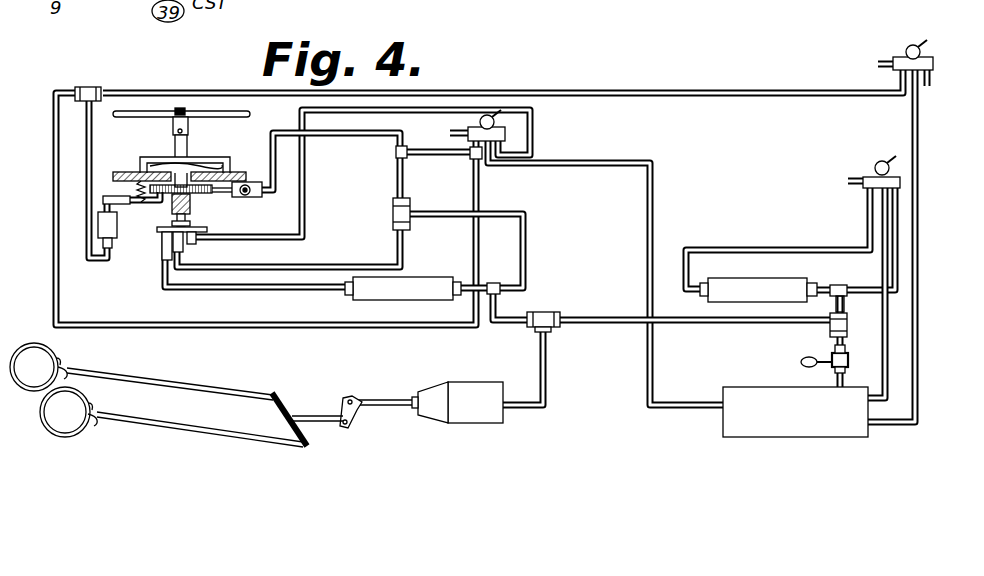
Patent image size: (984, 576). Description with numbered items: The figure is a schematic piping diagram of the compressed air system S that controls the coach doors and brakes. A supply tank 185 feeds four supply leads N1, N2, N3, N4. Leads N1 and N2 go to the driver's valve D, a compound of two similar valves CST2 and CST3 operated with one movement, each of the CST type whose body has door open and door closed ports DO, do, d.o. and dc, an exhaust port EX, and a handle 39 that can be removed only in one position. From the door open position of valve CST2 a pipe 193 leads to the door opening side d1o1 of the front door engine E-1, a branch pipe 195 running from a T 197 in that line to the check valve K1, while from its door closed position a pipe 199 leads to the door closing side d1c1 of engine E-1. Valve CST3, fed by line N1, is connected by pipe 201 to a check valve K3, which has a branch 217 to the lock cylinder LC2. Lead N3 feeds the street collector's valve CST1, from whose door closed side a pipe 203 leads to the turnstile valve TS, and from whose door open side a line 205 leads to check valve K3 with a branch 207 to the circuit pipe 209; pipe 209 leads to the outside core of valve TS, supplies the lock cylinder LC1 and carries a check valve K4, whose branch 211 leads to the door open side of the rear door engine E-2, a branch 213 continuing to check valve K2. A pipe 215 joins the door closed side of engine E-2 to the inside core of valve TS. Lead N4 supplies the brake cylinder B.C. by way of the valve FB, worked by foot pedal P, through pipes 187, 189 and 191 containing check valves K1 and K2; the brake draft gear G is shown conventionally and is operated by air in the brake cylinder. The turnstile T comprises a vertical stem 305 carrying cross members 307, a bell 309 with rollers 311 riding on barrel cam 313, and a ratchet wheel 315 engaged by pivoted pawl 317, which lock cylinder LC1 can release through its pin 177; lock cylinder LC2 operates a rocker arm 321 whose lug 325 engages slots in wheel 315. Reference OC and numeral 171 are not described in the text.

The check valve K3 is at (97, 88).
The cross members 307 is at (163, 112).
The element T is at (187, 183).
The vertical stem 305 is at (190, 135).
The bell 309 is at (190, 152).
The rollers 311 is at (160, 134).
The barrel cam 313 is at (130, 172).
The rocker arm 321 is at (119, 191).
The lug 325 is at (165, 210).
The ratchet wheel 315 is at (191, 204).
The pivoted pawl 317 is at (226, 205).
The rod 171 is at (262, 205).
The lock cylinder LC1 is at (259, 192).
The lock cylinder LC2 is at (100, 224).
The pin 177 is at (100, 211).
The branch 217 is at (88, 184).
The exhaust port EX is at (455, 133).
The turnstile valve TS is at (158, 252).
The port OC is at (170, 268).
The door open port DO is at (194, 259).
The pipe 203 is at (278, 239).
The line 205 is at (54, 166).
The pipe 215 is at (256, 288).
The circuit pipe 209 is at (398, 156).
The branch 207 is at (433, 154).
The check valve K4 is at (395, 220).
The check valve branch 211 is at (528, 251).
The rear door engine E-2 is at (403, 289).
The door closing side d1c1 is at (352, 298).
The door opening side d1o1 is at (445, 283).
The branch 213 is at (491, 325).
The check valve K2 is at (548, 318).
The pipe 191 is at (548, 367).
The pipe 189 is at (710, 324).
The brake draft gear G is at (240, 405).
The brake cylinder B.C. is at (478, 410).
The street collector's valve CST1 is at (485, 115).
The door open position d.o. is at (478, 118).
The handle 39 is at (502, 115).
The compressed air system S is at (590, 108).
The pipe 201 is at (722, 86).
The driver's valve D is at (812, 158).
The valve CST3 is at (893, 66).
The door open position do is at (906, 53).
The door closed position dc is at (921, 52).
The valve CST2 is at (865, 178).
The supply lead N3 is at (654, 191).
The pipe 199 is at (746, 251).
The front door engine E-1 is at (758, 290).
The T 197 is at (849, 280).
The branch pipe 195 is at (837, 305).
The check valve K1 is at (830, 328).
The supply lead N2 is at (848, 328).
The pipe 187 is at (832, 347).
The valve FB is at (848, 360).
The foot pedal P is at (802, 365).
The supply lead N4 is at (838, 378).
The supply tank 185 is at (833, 438).
The pipe 193 is at (898, 248).
The supply lead N1 is at (918, 276).